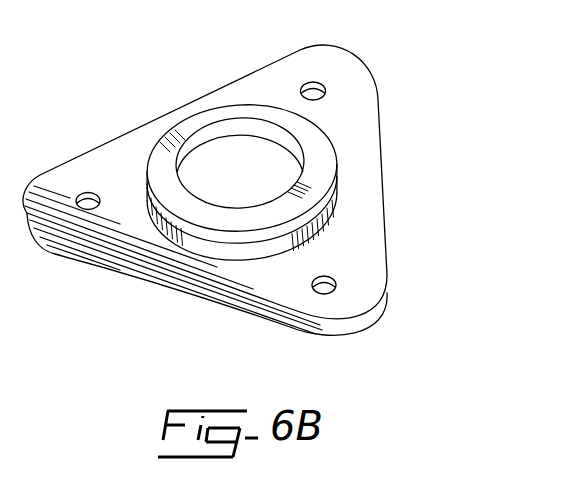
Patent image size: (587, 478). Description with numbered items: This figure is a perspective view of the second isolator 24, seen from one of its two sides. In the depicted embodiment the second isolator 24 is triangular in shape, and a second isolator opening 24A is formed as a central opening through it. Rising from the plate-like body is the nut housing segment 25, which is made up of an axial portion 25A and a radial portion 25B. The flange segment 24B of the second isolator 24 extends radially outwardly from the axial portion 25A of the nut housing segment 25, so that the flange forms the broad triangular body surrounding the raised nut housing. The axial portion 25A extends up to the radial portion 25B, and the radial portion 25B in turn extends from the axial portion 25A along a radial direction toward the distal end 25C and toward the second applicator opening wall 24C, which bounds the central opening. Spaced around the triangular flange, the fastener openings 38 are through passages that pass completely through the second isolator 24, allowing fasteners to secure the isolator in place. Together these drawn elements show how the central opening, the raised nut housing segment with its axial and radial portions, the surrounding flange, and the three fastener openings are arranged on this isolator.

The second isolator 24 is at (227, 181).
The second isolator opening 24A is at (248, 152).
The flange segment 24B is at (363, 238).
The second applicator opening wall 24C is at (250, 201).
The nut housing segment 25 is at (246, 186).
The axial portion 25A is at (340, 186).
The radial portion 25B is at (170, 183).
The distal end 25C is at (174, 124).
The fastener openings 38 is at (79, 192).